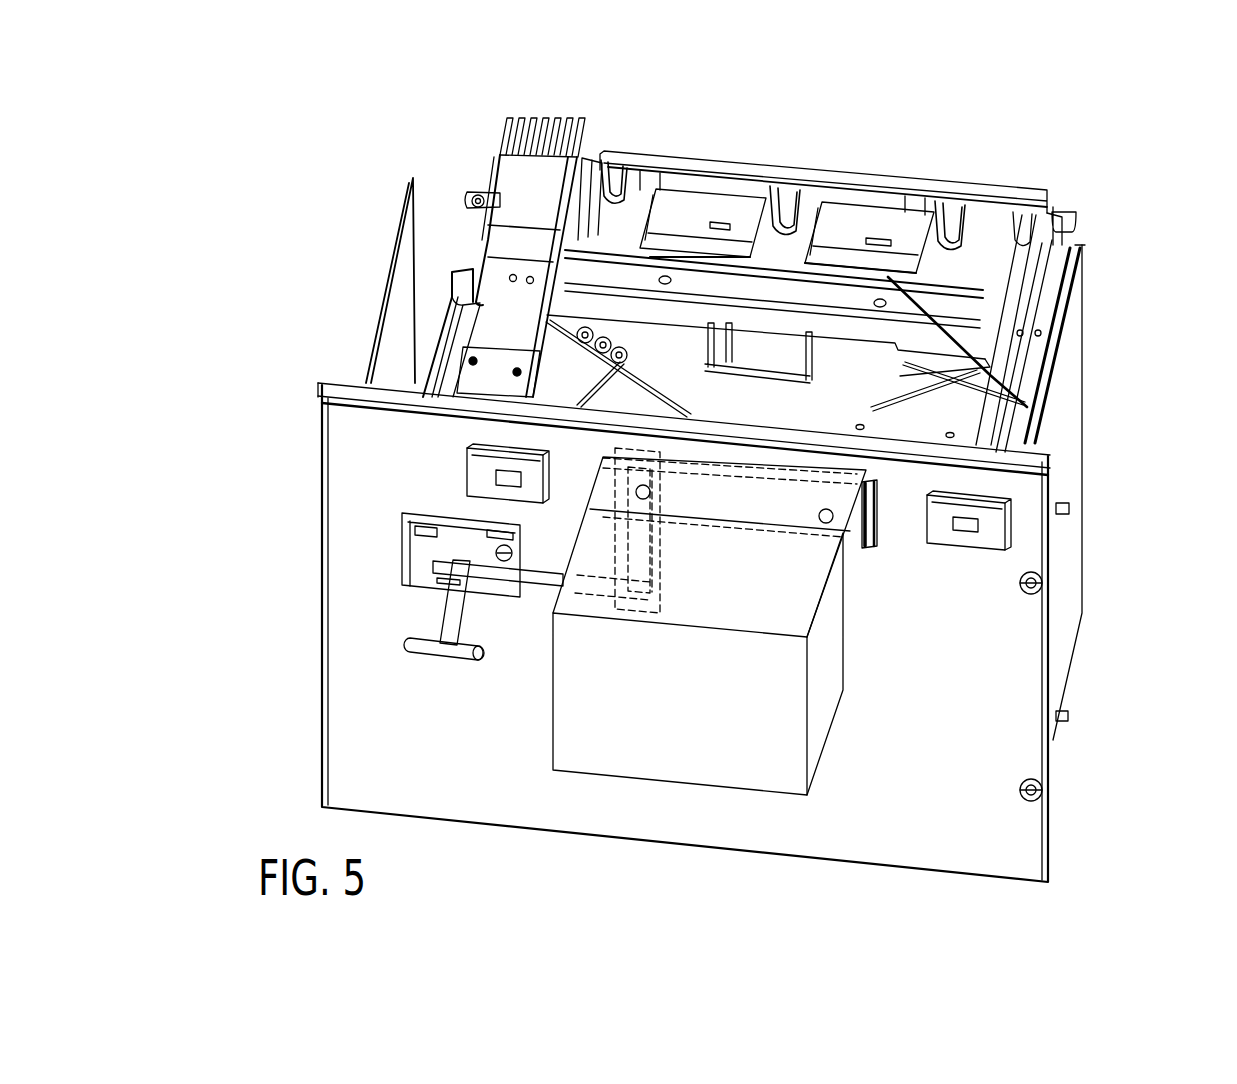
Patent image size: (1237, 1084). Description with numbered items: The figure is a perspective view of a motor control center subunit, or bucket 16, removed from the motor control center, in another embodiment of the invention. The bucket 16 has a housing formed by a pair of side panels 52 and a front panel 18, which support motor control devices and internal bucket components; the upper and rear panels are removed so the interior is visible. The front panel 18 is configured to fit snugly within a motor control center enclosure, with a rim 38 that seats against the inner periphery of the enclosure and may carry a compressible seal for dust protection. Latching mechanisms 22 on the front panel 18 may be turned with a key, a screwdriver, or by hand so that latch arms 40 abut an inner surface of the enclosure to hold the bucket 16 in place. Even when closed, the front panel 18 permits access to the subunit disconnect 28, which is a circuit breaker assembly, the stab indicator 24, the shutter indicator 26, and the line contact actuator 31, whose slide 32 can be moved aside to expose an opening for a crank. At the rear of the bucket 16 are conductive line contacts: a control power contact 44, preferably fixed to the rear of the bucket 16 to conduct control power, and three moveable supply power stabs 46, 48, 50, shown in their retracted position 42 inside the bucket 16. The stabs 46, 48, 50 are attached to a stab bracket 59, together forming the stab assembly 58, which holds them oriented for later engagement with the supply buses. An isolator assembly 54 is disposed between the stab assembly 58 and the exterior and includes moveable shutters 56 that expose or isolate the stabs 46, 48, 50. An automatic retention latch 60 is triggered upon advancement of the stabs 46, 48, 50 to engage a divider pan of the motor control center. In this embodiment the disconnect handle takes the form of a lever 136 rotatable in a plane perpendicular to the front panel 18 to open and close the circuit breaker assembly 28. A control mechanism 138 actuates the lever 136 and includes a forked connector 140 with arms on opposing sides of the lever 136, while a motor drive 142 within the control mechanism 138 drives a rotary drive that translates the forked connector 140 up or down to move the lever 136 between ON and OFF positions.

The bucket 16 is at (1153, 400).
The front panel 18 is at (893, 737).
The latching mechanisms 22 is at (1042, 595).
The stab indicator 24 is at (482, 473).
The shutter indicator 26 is at (993, 530).
The subunit disconnect 28 is at (453, 530).
The line contact actuator 31 is at (592, 452).
The slide 32 is at (878, 508).
The rim 38 is at (347, 380).
The latch arms 40 is at (1068, 506).
The retracted position 42 is at (750, 220).
The control power contact 44 is at (587, 110).
The supply power stab 46 is at (630, 222).
The supply power stab 48 is at (797, 237).
The supply power stab 50 is at (960, 247).
The side panels 52 is at (398, 243).
The isolator assembly 54 is at (747, 190).
The shutters 56 is at (718, 222).
The stab assembly 58 is at (990, 313).
The stab bracket 59 is at (985, 407).
The automatic retention latch 60 is at (820, 347).
The lever 136 is at (427, 660).
The control mechanism 138 is at (565, 737).
The forked connector 140 is at (533, 582).
The motor drive 142 is at (660, 558).